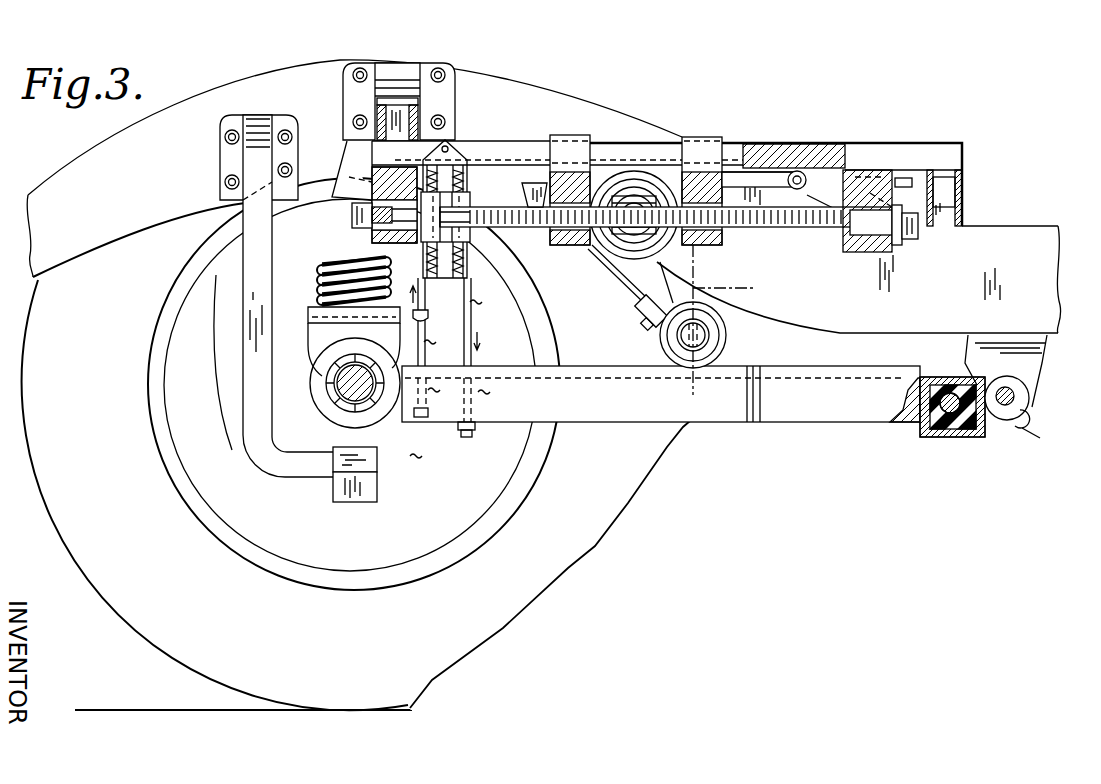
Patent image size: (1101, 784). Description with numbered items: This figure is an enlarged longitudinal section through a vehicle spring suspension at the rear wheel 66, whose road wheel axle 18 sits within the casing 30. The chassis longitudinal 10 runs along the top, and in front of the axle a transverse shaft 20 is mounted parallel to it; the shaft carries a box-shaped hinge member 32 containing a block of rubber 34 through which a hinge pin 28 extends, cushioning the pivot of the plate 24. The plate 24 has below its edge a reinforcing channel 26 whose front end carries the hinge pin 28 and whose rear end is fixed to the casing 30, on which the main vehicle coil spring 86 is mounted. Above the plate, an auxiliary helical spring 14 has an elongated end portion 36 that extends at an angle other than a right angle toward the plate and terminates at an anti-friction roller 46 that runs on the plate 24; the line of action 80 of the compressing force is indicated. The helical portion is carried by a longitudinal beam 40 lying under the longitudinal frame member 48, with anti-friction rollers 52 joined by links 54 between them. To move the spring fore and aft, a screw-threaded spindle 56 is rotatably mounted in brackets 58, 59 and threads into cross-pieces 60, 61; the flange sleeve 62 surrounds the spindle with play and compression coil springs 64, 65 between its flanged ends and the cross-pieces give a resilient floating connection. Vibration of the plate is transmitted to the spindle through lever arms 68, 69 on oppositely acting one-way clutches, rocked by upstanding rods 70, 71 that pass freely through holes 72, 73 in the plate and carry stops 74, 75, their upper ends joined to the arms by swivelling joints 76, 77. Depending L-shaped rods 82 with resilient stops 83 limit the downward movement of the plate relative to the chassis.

The longitudinal 10 is at (99, 151).
The auxiliary helical spring 14 is at (647, 170).
The road wheel axle 18 is at (337, 410).
The transverse shaft 20 is at (1021, 420).
The plate 24 is at (812, 377).
The reinforcing channel 26 is at (773, 423).
The hinge pin 28 is at (940, 432).
The casing 30 is at (333, 390).
The hinge member 32 is at (937, 377).
The block of rubber 34 is at (962, 435).
The elongated end portion 36 is at (628, 268).
The longitudinal beam 40 is at (823, 192).
The anti-friction roller 46 is at (726, 337).
The longitudinal frame member 48 is at (510, 132).
The anti-friction roller 52 is at (797, 167).
The link 54 is at (730, 173).
The screw-threaded spindle 56 is at (793, 233).
The bracket 58 is at (890, 246).
The bracket 59 is at (370, 236).
The cross-piece 60 is at (565, 135).
The cross-piece 61 is at (702, 137).
The flange sleeve 62 is at (643, 193).
The compression coil spring 64 is at (608, 240).
The compression coil spring 65 is at (700, 262).
The rear wheel 66 is at (113, 612).
The lever arm 68 is at (372, 157).
The lever arm 69 is at (468, 152).
The upstanding rod 70 is at (426, 293).
The upstanding rod 71 is at (475, 293).
The hole 72 is at (422, 374).
The hole 73 is at (472, 374).
The stop 74 is at (422, 325).
The stop 75 is at (458, 432).
The swivelling joint 76 is at (347, 172).
The swivelling joint 77 is at (522, 196).
The line of action 80 is at (745, 320).
The L-shaped rod 82 is at (257, 387).
The resilient stop 83 is at (377, 467).
The main vehicle coil spring 86 is at (320, 287).